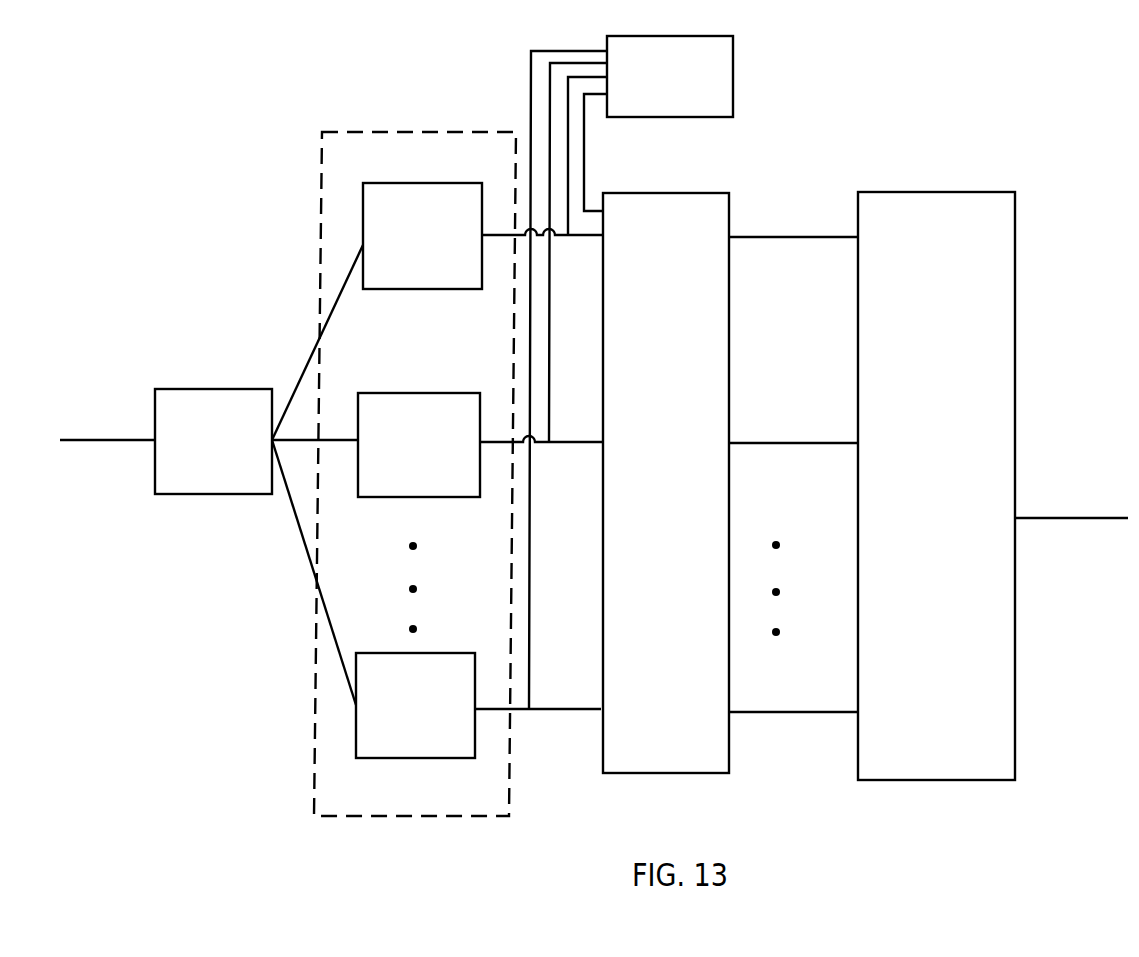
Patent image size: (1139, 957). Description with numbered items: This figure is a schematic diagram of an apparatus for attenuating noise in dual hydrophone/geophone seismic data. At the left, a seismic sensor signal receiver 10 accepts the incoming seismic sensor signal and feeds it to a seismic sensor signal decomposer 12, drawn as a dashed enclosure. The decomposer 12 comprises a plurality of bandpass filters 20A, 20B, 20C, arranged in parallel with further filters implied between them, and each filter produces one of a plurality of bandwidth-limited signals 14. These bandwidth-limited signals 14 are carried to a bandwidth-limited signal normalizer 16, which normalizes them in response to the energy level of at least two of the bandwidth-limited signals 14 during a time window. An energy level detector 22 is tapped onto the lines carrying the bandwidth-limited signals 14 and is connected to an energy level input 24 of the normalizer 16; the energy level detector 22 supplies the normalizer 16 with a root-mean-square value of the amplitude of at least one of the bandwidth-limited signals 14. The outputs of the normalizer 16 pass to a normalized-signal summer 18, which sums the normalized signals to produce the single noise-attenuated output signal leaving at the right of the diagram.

The seismic sensor signal receiver 10 is at (212, 494).
The seismic sensor signal decomposer 12 is at (407, 131).
The bandwidth-limited signals 14 is at (588, 237).
The bandwidth-limited signal normalizer 16 is at (703, 193).
The normalized-signal summer 18 is at (937, 192).
The bandpass filter 20A is at (440, 289).
The bandpass filter 20B is at (375, 497).
The bandpass filter 20C is at (432, 758).
The energy level detector 22 is at (733, 67).
The energy level input 24 is at (584, 150).